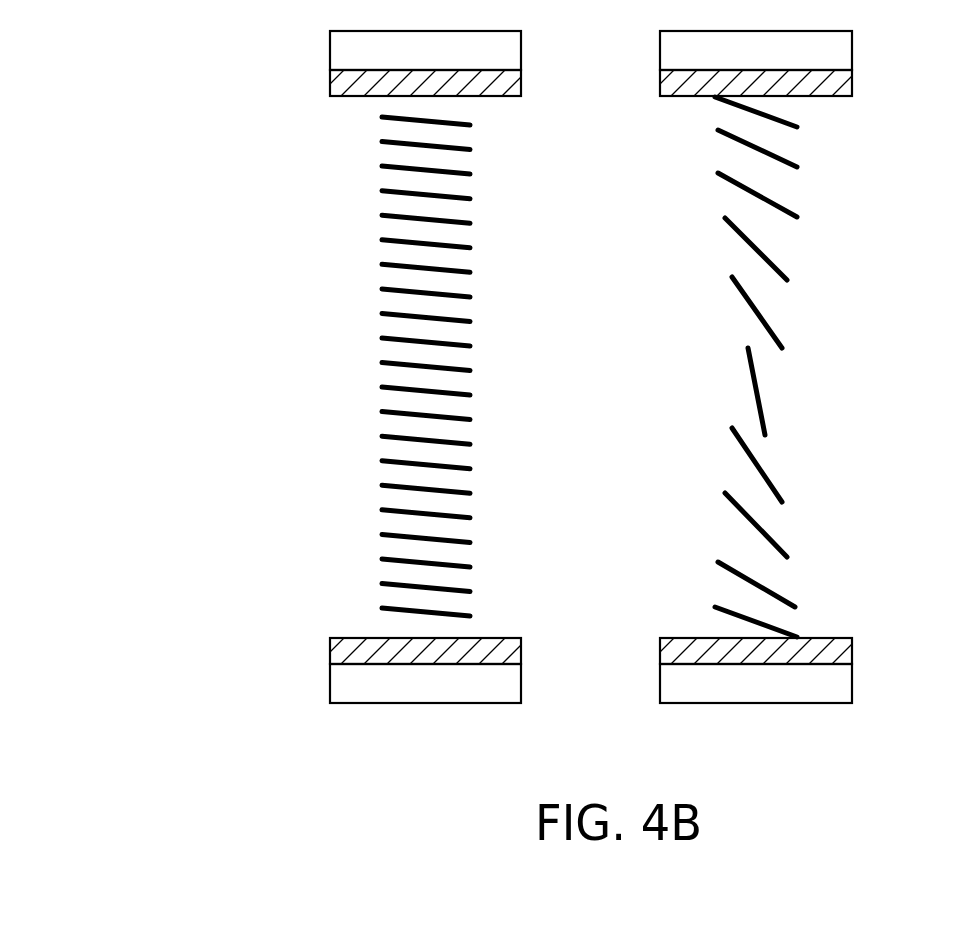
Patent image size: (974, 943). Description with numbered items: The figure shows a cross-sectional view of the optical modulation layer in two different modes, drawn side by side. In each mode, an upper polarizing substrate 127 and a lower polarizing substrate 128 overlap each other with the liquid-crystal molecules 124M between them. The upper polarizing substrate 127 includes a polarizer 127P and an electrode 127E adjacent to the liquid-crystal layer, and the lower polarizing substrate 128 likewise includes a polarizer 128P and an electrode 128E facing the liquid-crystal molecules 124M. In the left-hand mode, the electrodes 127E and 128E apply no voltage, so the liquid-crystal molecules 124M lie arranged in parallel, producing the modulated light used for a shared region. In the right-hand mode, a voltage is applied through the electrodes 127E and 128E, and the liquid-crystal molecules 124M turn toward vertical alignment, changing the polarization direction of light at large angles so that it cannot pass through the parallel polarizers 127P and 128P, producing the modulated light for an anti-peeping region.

The polarizing substrate 127 is at (519, 64).
The polarizer 127P is at (350, 49).
The electrode 127E is at (350, 82).
The polarizing substrate 128 is at (519, 670).
The electrode 128E is at (350, 645).
The polarizer 128P is at (350, 681).
The liquid-crystal molecules 124M is at (430, 292).